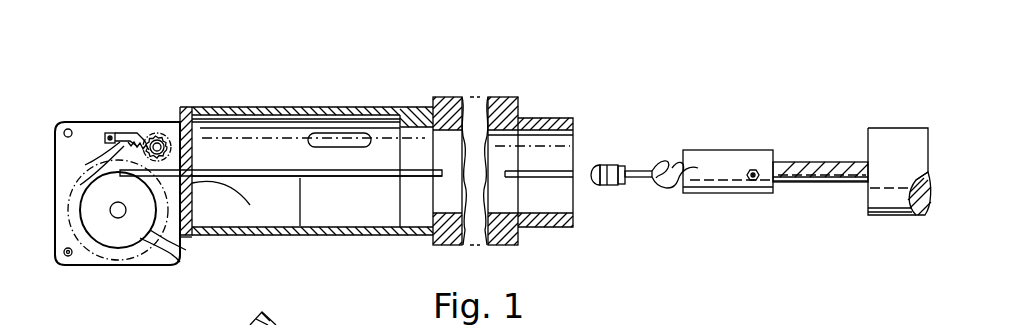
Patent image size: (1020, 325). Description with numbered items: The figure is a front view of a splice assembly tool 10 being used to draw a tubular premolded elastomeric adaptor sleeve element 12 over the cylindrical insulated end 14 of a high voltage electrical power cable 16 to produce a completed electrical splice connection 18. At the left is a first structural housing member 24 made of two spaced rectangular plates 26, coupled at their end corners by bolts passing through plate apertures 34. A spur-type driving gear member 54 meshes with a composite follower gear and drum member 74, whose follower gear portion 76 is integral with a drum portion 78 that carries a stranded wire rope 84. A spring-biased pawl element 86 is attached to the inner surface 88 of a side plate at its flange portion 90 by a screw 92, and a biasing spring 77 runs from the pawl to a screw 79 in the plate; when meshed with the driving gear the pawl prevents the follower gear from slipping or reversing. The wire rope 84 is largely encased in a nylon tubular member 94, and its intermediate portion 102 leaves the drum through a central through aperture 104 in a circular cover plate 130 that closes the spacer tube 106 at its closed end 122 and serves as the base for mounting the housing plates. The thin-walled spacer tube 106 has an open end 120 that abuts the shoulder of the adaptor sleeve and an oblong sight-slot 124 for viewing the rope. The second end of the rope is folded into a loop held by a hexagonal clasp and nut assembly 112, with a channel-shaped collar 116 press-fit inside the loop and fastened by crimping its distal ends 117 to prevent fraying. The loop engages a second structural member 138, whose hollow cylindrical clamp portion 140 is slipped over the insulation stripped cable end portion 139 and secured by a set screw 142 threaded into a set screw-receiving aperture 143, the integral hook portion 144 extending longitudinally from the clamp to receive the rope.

The splice assembly tool 10 is at (321, 158).
The adaptor sleeve element 12 is at (504, 92).
The insulated end 14 is at (868, 138).
The high voltage electrical power cable 16 is at (901, 126).
The electrical splice connection 18 is at (838, 228).
The housing member 24 is at (97, 115).
The plate 26 is at (161, 250).
The plate through aperture 34 is at (65, 126).
The driving gear member 54 is at (153, 136).
The follower gear and drum member 74 is at (88, 268).
The follower gear portion 76 is at (138, 270).
The biasing spring 77 is at (120, 141).
The drum portion 78 is at (176, 244).
The screw 79 is at (124, 147).
The wire rope 84 is at (563, 170).
The pawl element 86 is at (124, 131).
The inner surface 88 is at (162, 130).
The flange portion 90 is at (106, 132).
The screw 92 is at (112, 128).
The tubular member 94 is at (305, 183).
The intermediate portion 102 is at (210, 170).
The through aperture 104 is at (222, 188).
The spacer tube 106 is at (308, 106).
The clasp and nut assembly 112 is at (608, 186).
The collar 116 is at (644, 184).
The distal ends 117 is at (628, 168).
The open end 120 is at (446, 246).
The closed end 122 is at (183, 242).
The sight-slot 124 is at (352, 137).
The cover plate 130 is at (184, 108).
The second structural member 138 is at (750, 176).
The insulation stripped cable end portion 139 is at (815, 184).
The clamp portion 140 is at (710, 176).
The set screw 142 is at (756, 170).
The set screw-receiving aperture 143 is at (752, 182).
The hook portion 144 is at (675, 166).